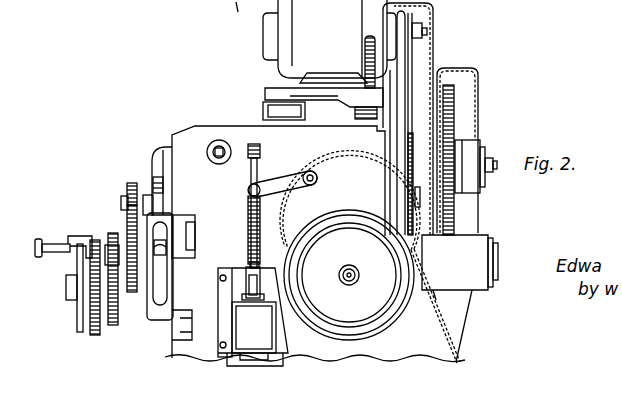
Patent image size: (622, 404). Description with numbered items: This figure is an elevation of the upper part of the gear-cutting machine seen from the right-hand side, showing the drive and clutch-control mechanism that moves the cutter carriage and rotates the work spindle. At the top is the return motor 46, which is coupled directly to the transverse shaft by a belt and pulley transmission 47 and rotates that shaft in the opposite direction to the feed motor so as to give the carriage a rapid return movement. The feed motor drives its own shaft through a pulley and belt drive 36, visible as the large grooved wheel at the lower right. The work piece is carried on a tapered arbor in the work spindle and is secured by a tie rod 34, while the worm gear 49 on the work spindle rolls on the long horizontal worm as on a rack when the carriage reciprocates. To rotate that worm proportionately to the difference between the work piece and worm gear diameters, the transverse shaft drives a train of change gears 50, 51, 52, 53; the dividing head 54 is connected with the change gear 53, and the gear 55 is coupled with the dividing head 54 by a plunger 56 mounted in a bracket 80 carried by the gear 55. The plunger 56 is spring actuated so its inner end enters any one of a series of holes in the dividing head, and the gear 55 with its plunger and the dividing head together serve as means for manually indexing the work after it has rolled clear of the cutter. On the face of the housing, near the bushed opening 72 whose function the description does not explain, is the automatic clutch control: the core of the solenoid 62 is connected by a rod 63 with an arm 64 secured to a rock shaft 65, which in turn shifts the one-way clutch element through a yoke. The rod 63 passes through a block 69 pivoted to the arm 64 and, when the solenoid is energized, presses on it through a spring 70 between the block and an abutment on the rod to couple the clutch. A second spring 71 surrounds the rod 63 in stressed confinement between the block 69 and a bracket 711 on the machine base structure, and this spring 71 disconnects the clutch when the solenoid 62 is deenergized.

The tie rod 34 is at (492, 158).
The pulley and belt drive 36 is at (399, 311).
The return motor 46 is at (286, 42).
The belt and pulley transmission 47 is at (405, 76).
The worm gear 49 is at (452, 123).
The change gear 50 is at (157, 177).
The change gear 51 is at (131, 183).
The change gear 52 is at (127, 218).
The change gear 53 is at (115, 325).
The dividing head 54 is at (78, 324).
The gear 55 is at (96, 336).
The plunger 56 is at (50, 243).
The solenoid 62 is at (236, 314).
The rod 63 is at (248, 214).
The arm 64 is at (290, 177).
The rock shaft 65 is at (318, 178).
The block 69 is at (248, 191).
The spring 70 is at (258, 165).
The spring 71 is at (258, 255).
The bracket 711 is at (250, 268).
The hole 72 is at (222, 141).
The bracket 80 is at (80, 236).